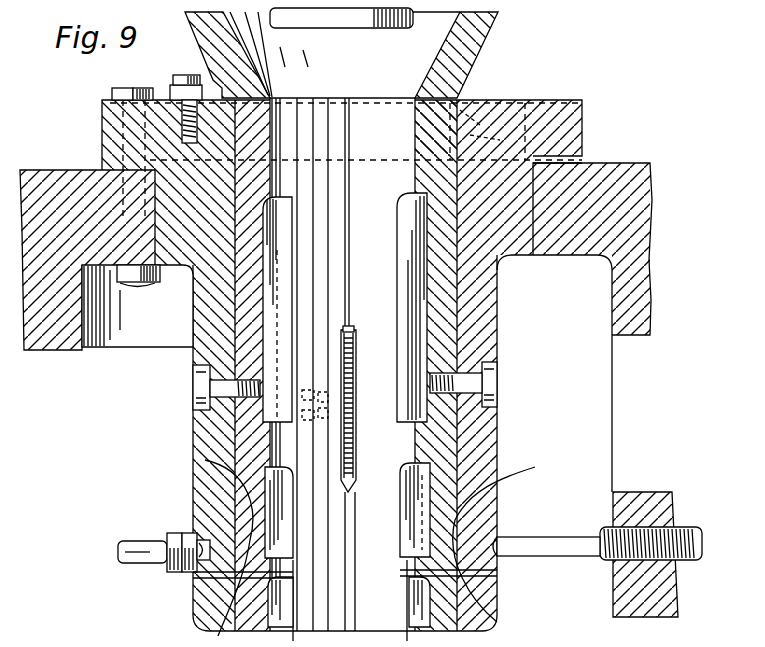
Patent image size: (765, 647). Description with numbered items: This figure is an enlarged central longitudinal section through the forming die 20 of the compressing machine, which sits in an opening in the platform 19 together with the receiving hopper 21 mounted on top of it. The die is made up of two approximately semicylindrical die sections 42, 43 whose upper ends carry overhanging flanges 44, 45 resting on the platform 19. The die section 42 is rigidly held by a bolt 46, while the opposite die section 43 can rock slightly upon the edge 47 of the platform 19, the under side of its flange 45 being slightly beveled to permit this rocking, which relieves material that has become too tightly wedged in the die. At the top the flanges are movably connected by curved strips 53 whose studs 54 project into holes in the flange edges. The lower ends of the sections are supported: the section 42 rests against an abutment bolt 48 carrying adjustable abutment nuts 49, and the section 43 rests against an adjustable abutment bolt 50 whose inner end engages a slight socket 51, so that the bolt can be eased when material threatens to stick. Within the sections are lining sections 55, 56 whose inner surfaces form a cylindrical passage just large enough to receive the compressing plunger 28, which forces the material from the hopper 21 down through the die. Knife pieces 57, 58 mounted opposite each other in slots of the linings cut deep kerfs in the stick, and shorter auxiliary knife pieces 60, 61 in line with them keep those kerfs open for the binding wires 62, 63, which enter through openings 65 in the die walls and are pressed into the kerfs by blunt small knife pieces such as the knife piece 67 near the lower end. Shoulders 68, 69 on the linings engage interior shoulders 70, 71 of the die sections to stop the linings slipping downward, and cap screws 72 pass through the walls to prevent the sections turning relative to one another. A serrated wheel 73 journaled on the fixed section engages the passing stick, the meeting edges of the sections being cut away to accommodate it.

The platform 19 is at (635, 213).
The forming die 20 is at (346, 369).
The receiving hopper 21 is at (465, 52).
The compressing plunger 28 is at (340, 20).
The die section 42 is at (200, 305).
The die section 43 is at (475, 284).
The overhanging flange 44 is at (108, 128).
The overhanging flange 45 is at (575, 131).
The bolt 46 is at (118, 88).
The edge 47 is at (617, 161).
The abutment bolt 48 is at (142, 547).
The abutment nuts 49 is at (190, 532).
The adjustable abutment bolt 50 is at (612, 562).
The socket 51 is at (500, 534).
The curved strips 53 is at (548, 97).
The studs 54 is at (492, 96).
The lining section 55 is at (247, 337).
The lining section 56 is at (440, 316).
The knife piece 57 is at (285, 307).
The knife piece 58 is at (405, 218).
The auxiliary knife piece 60 is at (285, 524).
The auxiliary knife piece 61 is at (417, 514).
The binding wire 62 is at (186, 577).
The binding wire 63 is at (500, 576).
The openings 65 is at (218, 583).
The small knife piece 67 is at (432, 617).
The shoulder 68 is at (225, 470).
The shoulder 69 is at (507, 537).
The interior shoulder 70 is at (516, 641).
The interior shoulder 71 is at (500, 603).
The cap screws 72 is at (198, 393).
The serrated wheel 73 is at (358, 465).